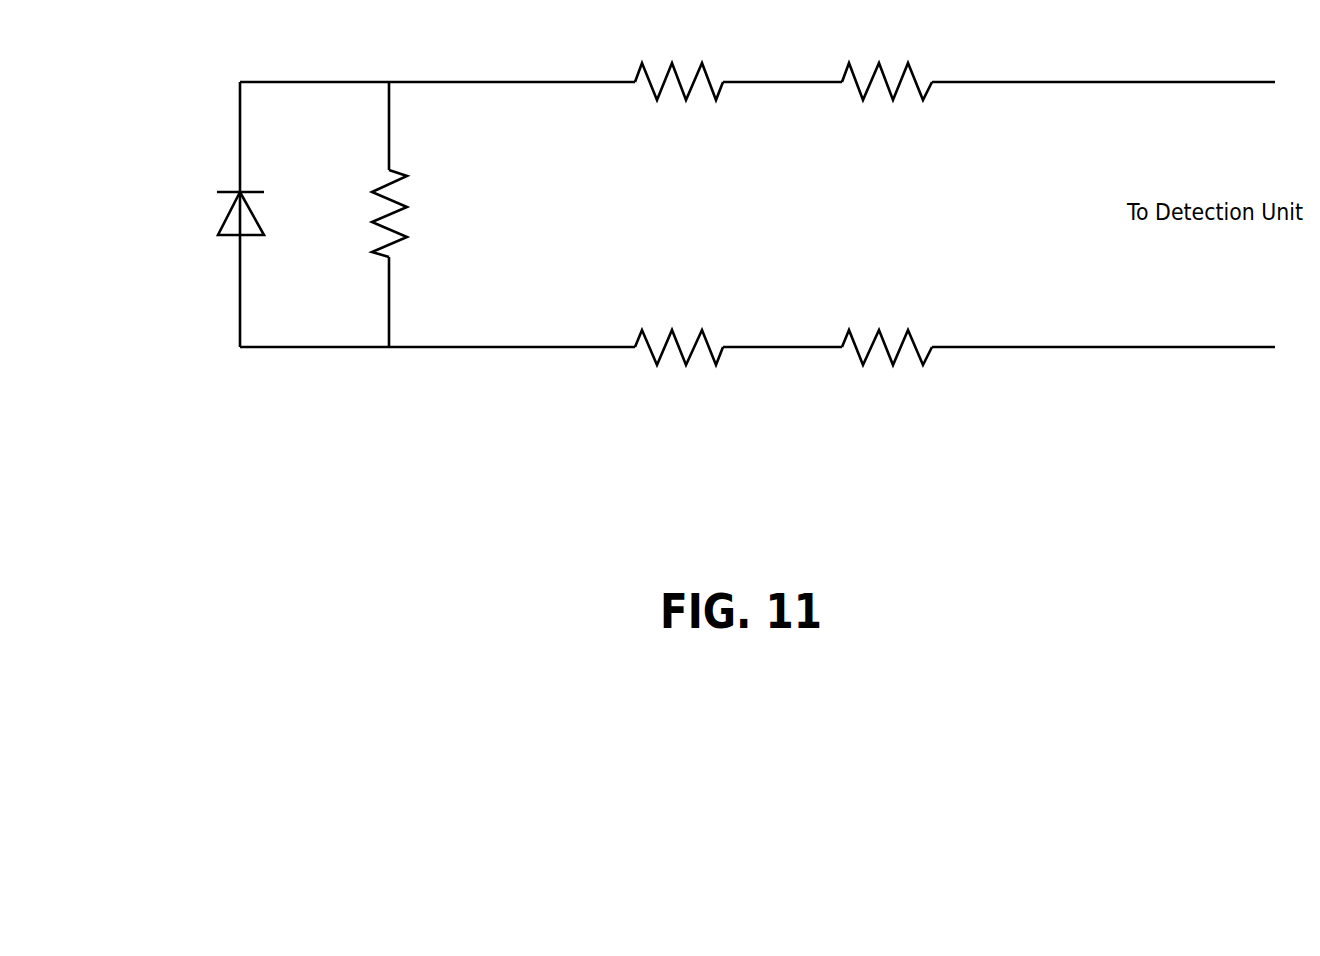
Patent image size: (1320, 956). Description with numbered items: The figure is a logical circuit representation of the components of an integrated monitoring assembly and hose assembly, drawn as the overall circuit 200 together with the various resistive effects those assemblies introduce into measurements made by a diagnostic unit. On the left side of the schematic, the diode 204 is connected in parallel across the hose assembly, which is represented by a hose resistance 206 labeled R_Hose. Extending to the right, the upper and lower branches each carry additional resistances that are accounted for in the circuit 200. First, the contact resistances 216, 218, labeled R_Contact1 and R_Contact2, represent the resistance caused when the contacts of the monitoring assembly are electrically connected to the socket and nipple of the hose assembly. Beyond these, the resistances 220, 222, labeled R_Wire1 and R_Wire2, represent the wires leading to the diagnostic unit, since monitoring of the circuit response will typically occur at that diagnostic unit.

The circuit 200 is at (214, 438).
The diode 204 is at (219, 233).
The hose resistance 206 is at (378, 226).
The contact resistance 216 is at (707, 72).
The contact resistance 218 is at (707, 337).
The wire resistance 220 is at (912, 72).
The wire resistance 222 is at (912, 337).